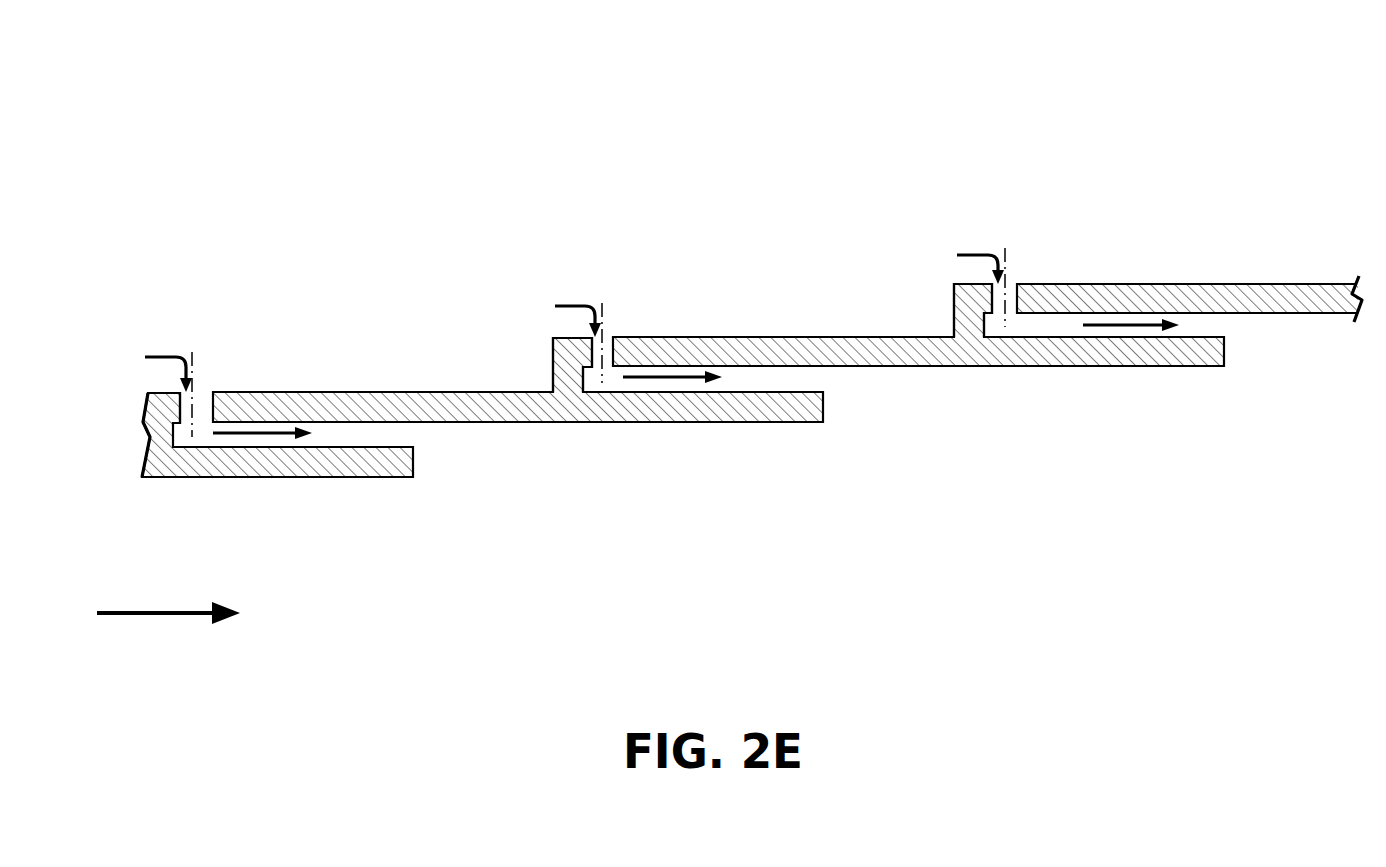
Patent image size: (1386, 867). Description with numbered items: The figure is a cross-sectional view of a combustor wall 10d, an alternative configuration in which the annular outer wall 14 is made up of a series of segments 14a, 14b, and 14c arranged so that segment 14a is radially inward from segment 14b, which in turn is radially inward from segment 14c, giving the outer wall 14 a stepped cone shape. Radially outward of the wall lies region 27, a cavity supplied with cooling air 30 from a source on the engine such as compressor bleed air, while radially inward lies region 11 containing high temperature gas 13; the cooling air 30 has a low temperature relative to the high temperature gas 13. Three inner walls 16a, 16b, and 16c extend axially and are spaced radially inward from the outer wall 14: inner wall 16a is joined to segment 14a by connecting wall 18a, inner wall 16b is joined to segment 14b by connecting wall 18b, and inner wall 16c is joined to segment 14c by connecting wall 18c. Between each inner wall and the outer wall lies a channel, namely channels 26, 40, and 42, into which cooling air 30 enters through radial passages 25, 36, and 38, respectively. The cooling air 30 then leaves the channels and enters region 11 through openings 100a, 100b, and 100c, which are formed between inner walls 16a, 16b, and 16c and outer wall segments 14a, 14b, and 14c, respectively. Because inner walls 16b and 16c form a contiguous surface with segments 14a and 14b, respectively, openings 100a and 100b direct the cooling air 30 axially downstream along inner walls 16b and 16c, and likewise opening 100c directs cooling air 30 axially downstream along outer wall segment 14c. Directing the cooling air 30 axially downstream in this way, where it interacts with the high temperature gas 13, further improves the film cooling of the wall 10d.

The wall 10d is at (1334, 180).
The region 11 is at (321, 603).
The high temperature gas 13 is at (159, 618).
The outer wall 14 is at (805, 232).
The segment 14a is at (335, 403).
The segment 14b is at (727, 353).
The segment 14c is at (1146, 298).
The inner wall 16a is at (170, 488).
The inner wall 16b is at (823, 432).
The inner wall 16c is at (983, 373).
The connecting wall 18a is at (162, 414).
The connecting wall 18b is at (572, 369).
The connecting wall 18c is at (972, 320).
The radial passage 25 is at (210, 393).
The channel 26 is at (326, 444).
The region 27 is at (318, 266).
The cooling air 30 is at (170, 357).
The radial passage 36 is at (609, 352).
The radial passage 38 is at (1013, 300).
The channel 40 is at (745, 388).
The channel 42 is at (1035, 334).
The opening 100a is at (415, 422).
The opening 100b is at (824, 367).
The opening 100c is at (1230, 314).